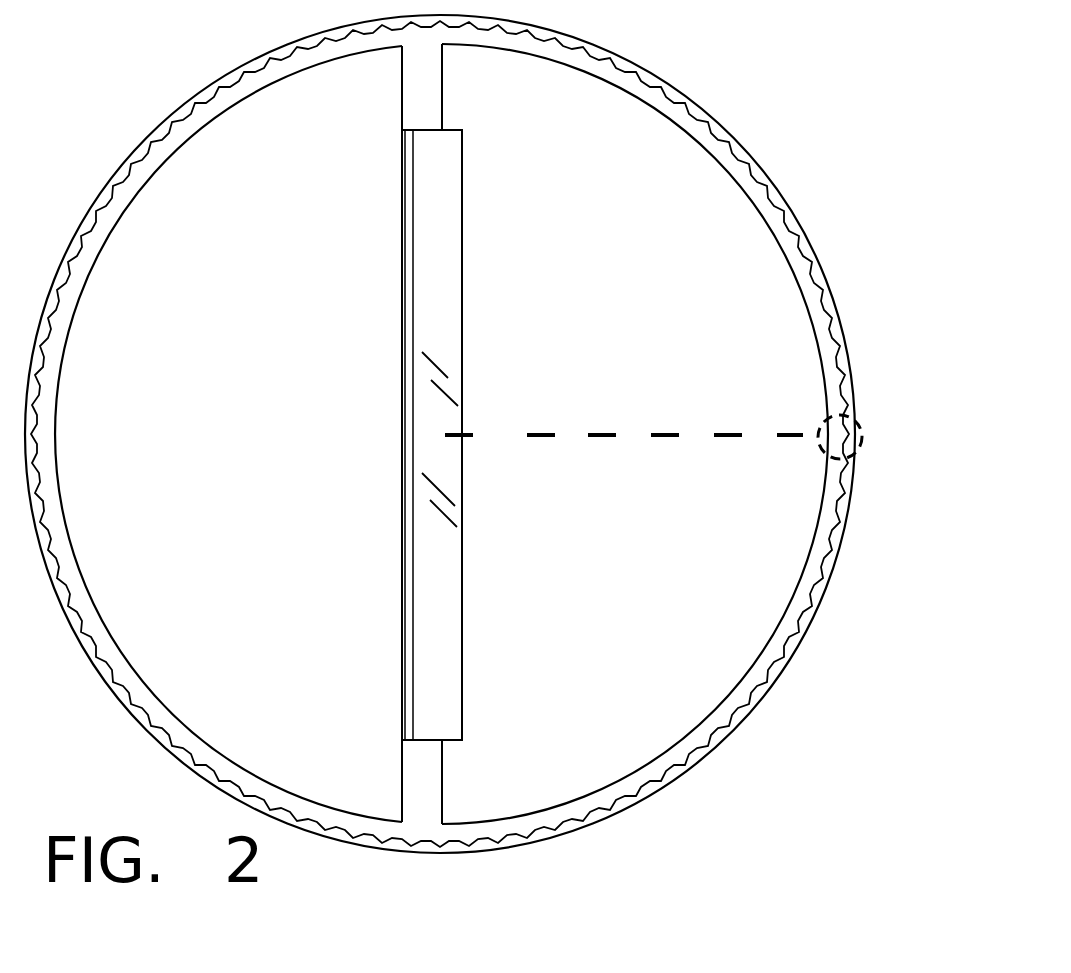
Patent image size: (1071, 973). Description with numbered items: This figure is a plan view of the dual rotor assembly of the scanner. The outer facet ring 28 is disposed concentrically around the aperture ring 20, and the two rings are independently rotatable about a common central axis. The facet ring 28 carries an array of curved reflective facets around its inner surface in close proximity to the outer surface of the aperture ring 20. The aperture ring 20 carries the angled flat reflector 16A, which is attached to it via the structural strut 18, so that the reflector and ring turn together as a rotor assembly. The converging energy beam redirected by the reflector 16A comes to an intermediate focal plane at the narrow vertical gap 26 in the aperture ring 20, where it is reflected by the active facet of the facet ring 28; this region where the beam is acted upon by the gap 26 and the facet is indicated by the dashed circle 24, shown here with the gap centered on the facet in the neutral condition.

The first angled flat reflector 16A is at (409, 490).
The structural strut 18 is at (425, 99).
The aperture ring 20 is at (787, 269).
The dashed circle 24 is at (823, 420).
The narrow vertical gap 26 is at (822, 439).
The facet ring 28 is at (645, 83).